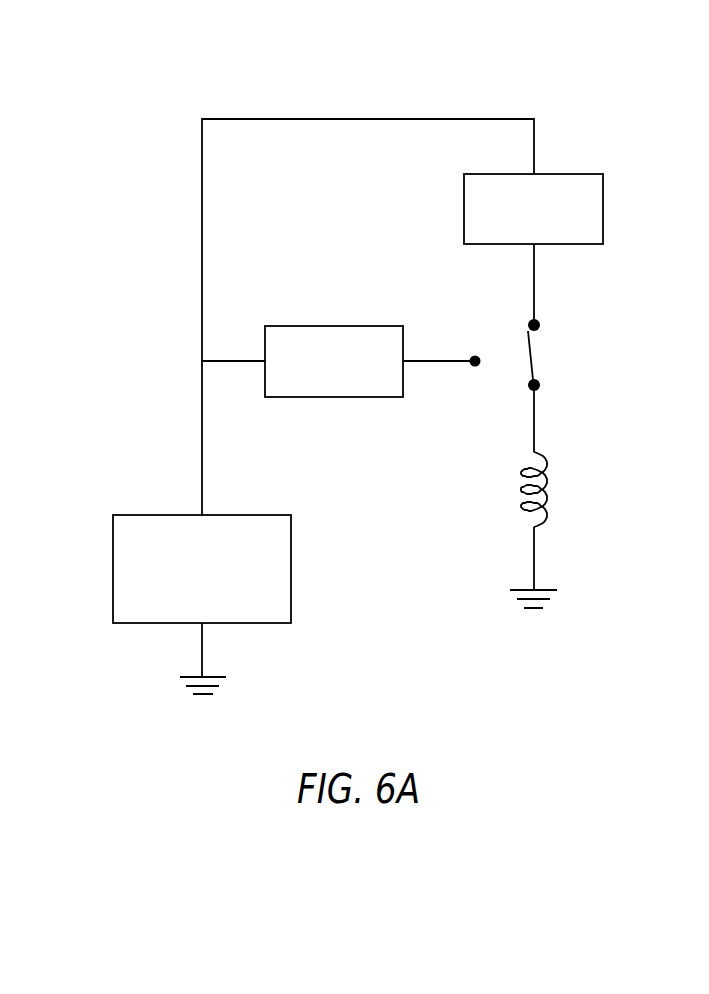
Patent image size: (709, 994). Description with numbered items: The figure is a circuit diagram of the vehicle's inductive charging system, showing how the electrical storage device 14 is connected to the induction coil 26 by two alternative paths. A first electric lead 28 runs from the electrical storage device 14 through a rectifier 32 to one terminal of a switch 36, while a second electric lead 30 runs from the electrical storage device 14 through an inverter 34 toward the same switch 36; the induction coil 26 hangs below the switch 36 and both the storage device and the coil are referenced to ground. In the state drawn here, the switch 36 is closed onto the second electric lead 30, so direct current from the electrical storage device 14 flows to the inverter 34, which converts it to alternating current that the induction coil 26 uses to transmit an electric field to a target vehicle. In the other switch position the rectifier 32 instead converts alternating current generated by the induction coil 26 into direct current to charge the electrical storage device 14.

The electrical storage device 14 is at (133, 515).
The induction coil 26 is at (557, 491).
The first electric lead 28 is at (226, 361).
The second electric lead 30 is at (257, 118).
The rectifier 32 is at (385, 326).
The inverter 34 is at (586, 174).
The switch 36 is at (501, 371).